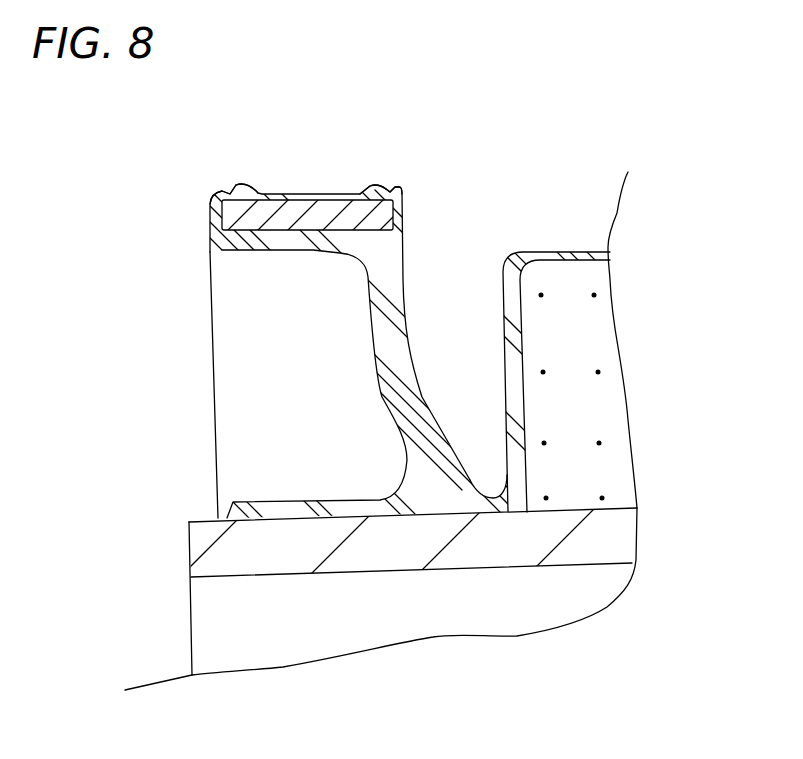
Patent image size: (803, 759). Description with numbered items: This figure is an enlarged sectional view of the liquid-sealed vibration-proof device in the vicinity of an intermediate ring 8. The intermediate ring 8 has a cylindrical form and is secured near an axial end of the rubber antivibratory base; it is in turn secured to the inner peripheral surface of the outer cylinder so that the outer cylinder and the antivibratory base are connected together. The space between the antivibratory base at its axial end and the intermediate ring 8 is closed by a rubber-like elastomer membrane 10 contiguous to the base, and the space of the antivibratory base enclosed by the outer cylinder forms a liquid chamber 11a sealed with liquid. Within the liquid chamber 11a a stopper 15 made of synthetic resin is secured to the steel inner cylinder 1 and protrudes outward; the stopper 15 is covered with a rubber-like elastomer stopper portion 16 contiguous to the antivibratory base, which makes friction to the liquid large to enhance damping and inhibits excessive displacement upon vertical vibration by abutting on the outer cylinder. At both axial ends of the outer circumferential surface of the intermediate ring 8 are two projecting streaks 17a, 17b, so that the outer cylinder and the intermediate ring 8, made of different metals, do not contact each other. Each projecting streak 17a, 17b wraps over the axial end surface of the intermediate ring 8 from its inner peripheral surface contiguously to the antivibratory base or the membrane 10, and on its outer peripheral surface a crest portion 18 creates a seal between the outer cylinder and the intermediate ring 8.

The inner cylinder 1 is at (502, 548).
The intermediate ring 8 is at (292, 207).
The rubber-like elastomer membrane 10 is at (390, 358).
The liquid chamber 11a is at (458, 270).
The stopper 15 is at (572, 293).
The rubber-like elastomer stopper portion 16 is at (527, 250).
The projecting streak 17a is at (230, 195).
The projecting streak 17b is at (392, 187).
The crest portion 18 is at (245, 183).